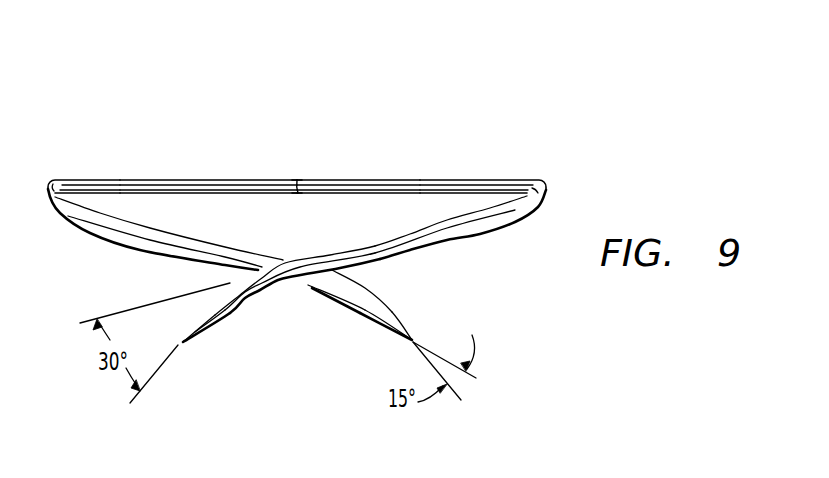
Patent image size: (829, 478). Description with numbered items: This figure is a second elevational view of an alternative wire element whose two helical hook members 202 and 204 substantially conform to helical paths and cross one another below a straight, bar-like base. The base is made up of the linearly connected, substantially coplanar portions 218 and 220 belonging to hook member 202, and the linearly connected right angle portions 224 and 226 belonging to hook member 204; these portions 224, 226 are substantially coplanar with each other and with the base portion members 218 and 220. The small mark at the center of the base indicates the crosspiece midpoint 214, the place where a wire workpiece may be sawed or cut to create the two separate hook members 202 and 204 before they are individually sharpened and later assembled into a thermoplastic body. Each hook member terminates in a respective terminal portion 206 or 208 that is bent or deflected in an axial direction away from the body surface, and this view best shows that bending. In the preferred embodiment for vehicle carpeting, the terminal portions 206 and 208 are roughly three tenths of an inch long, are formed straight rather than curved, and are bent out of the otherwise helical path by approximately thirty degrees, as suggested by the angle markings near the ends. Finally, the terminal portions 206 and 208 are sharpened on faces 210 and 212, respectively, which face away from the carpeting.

The hook member 202 is at (477, 228).
The hook member 204 is at (90, 217).
The terminal portion 206 is at (243, 300).
The terminal portion 208 is at (362, 310).
The sharpened face 210 is at (203, 312).
The sharpened face 212 is at (392, 313).
The crosspiece midpoint 214 is at (309, 180).
The base portion member 218 is at (460, 182).
The base portion member 220 is at (383, 180).
The right angle portion 224 is at (95, 183).
The right angle portion 226 is at (183, 180).